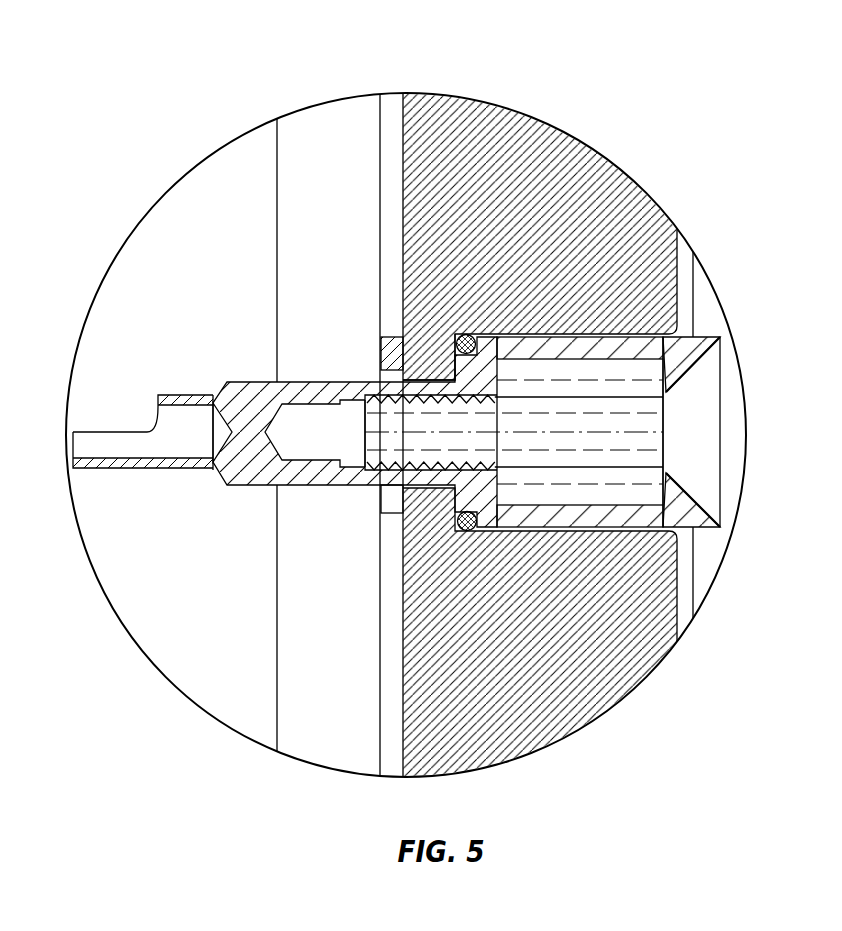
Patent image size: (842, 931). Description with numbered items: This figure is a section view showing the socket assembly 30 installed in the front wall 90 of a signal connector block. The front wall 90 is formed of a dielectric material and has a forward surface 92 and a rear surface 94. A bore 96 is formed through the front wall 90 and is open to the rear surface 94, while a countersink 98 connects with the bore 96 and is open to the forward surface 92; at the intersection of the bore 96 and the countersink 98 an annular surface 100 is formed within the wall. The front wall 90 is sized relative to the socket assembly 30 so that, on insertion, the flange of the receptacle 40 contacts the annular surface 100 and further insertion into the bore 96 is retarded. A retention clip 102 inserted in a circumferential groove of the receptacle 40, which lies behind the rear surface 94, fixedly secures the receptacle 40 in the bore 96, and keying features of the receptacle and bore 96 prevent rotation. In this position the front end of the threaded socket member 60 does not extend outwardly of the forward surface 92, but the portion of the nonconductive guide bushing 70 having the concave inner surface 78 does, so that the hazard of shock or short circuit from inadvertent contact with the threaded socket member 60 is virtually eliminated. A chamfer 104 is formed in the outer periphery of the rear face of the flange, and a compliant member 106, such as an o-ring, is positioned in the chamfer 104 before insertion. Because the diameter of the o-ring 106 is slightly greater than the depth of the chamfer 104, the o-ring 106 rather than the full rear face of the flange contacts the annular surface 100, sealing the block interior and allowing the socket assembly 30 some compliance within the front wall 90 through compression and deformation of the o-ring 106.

The socket assembly 30 is at (703, 537).
The receptacle 40 is at (260, 382).
The threaded socket member 60 is at (490, 437).
The nonconductive guide bushing 70 is at (653, 299).
The concave inner surface 78 is at (705, 500).
The front wall 90 is at (463, 145).
The forward surface 92 is at (683, 280).
The rear surface 94 is at (400, 243).
The bore 96 is at (430, 370).
The countersink 98 is at (568, 331).
The annular surface 100 is at (478, 349).
The retention clip 102 is at (382, 352).
The chamfer 104 is at (480, 523).
The compliant member 106 is at (462, 526).